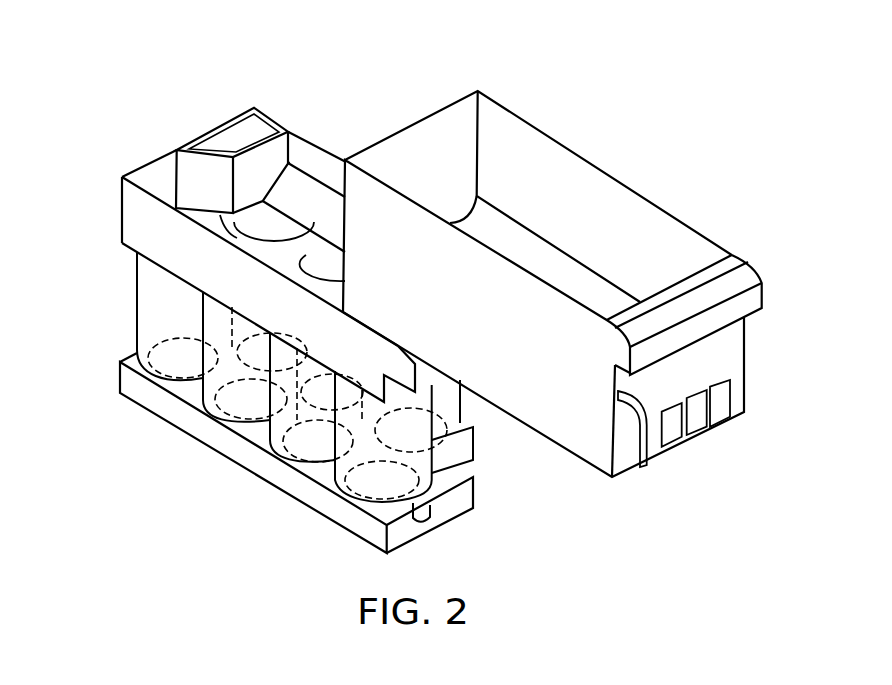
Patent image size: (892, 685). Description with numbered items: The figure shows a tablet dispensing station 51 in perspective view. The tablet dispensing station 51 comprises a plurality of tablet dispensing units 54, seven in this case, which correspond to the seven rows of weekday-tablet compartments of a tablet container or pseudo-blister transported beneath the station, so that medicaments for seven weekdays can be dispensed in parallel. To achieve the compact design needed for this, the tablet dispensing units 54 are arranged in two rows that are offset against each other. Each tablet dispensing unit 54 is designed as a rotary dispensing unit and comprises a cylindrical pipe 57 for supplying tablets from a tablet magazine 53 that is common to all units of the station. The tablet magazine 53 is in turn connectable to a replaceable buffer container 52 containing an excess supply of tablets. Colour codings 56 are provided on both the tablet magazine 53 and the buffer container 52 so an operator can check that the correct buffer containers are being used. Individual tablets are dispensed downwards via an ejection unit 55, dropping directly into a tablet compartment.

The tablet dispensing station 51 is at (197, 105).
The buffer container 52 is at (587, 223).
The tablet magazine 53 is at (167, 177).
The tablet dispensing unit 54 is at (178, 358).
The ejection unit 55 is at (160, 395).
The colour codings 56 is at (697, 415).
The cylindrical pipe 57 is at (160, 293).